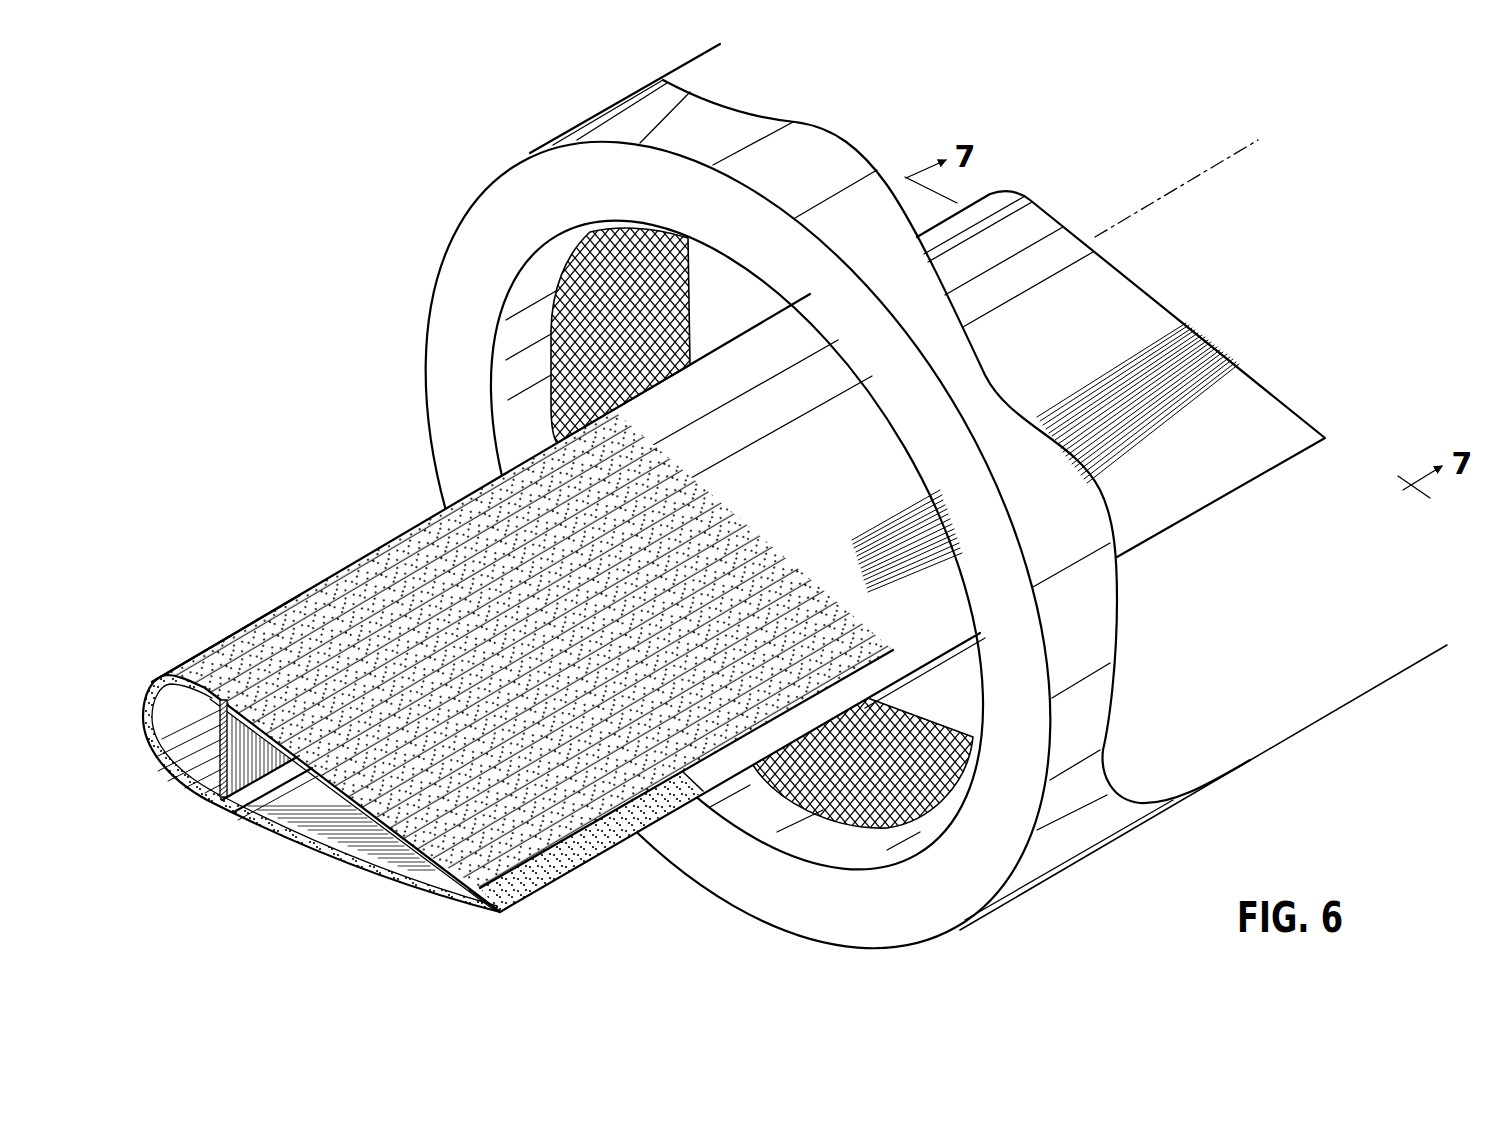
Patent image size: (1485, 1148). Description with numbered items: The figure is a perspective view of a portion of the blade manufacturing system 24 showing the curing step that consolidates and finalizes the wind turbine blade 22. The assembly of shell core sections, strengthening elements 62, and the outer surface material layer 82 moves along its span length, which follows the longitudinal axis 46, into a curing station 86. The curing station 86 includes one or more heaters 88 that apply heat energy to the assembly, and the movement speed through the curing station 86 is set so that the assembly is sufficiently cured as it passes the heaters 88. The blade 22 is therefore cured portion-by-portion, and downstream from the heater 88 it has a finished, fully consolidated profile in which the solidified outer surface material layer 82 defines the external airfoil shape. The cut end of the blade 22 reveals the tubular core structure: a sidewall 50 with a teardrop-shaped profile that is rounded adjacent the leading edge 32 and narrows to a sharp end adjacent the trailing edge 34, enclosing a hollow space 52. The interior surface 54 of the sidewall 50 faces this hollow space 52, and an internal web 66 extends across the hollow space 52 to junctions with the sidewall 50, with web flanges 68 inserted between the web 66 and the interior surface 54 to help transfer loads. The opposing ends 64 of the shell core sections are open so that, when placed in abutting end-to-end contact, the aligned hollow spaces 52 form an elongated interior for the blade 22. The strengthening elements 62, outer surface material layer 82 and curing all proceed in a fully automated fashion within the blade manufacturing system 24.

The wind turbine blade 22 is at (300, 577).
The blade manufacturing system 24 is at (591, 110).
The leading edge 32 is at (141, 696).
The trailing edge 34 is at (555, 887).
The longitudinal axis 46 is at (1204, 170).
The sidewall 50 is at (490, 904).
The hollow space 52 is at (199, 758).
The interior surface 54 is at (336, 822).
The strengthening elements 62 is at (217, 690).
The opposing ends 64 is at (1226, 357).
The internal web 66 is at (218, 741).
The web flanges 68 is at (186, 697).
The outer surface material layer 82 is at (420, 573).
The curing station 86 is at (491, 186).
The heaters 88 is at (550, 312).